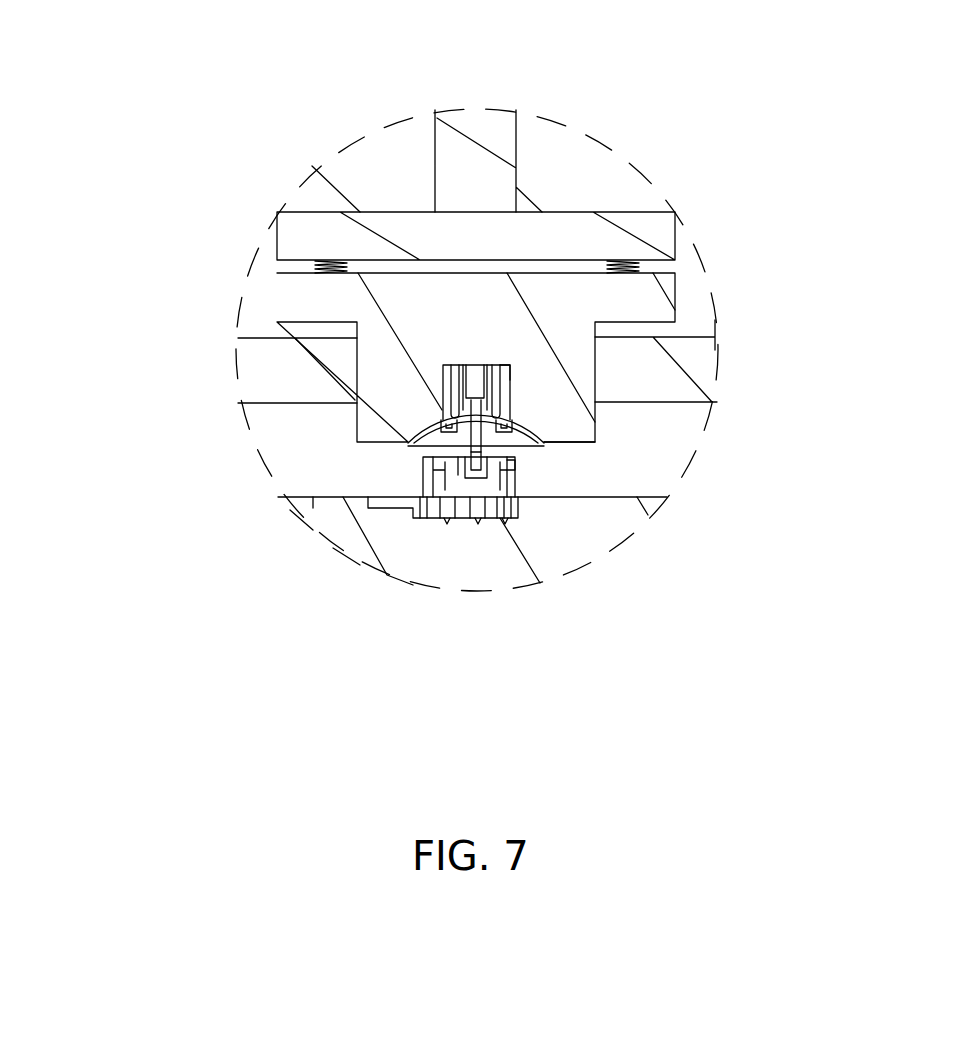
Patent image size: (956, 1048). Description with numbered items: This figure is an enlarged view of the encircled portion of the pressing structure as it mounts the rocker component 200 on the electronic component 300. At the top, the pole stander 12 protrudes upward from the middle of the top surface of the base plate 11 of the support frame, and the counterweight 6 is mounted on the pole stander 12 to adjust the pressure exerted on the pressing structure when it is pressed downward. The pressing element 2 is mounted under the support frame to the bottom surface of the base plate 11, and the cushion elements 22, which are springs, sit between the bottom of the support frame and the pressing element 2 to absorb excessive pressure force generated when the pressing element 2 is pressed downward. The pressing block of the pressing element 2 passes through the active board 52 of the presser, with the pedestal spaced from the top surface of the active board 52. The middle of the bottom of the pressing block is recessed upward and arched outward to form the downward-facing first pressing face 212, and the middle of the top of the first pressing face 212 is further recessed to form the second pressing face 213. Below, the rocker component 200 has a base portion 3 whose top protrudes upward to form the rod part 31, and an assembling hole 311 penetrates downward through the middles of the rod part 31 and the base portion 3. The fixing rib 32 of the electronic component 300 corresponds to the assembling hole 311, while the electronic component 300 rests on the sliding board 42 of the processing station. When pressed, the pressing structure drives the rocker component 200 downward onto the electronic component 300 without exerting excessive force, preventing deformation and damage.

The pressing element 2 is at (643, 302).
The base portion 3 is at (427, 427).
The counterweight 6 is at (608, 178).
The base plate 11 is at (323, 237).
The pole stander 12 is at (478, 130).
The cushion element 22 is at (317, 263).
The rod part 31 is at (452, 390).
The fixing rib 32 is at (517, 463).
The sliding board 42 is at (452, 558).
The active board 52 is at (677, 380).
The rocker component 200 is at (289, 396).
The first pressing face 212 is at (520, 427).
The second pressing face 213 is at (507, 367).
The electronic component 300 is at (537, 523).
The assembling hole 311 is at (472, 430).